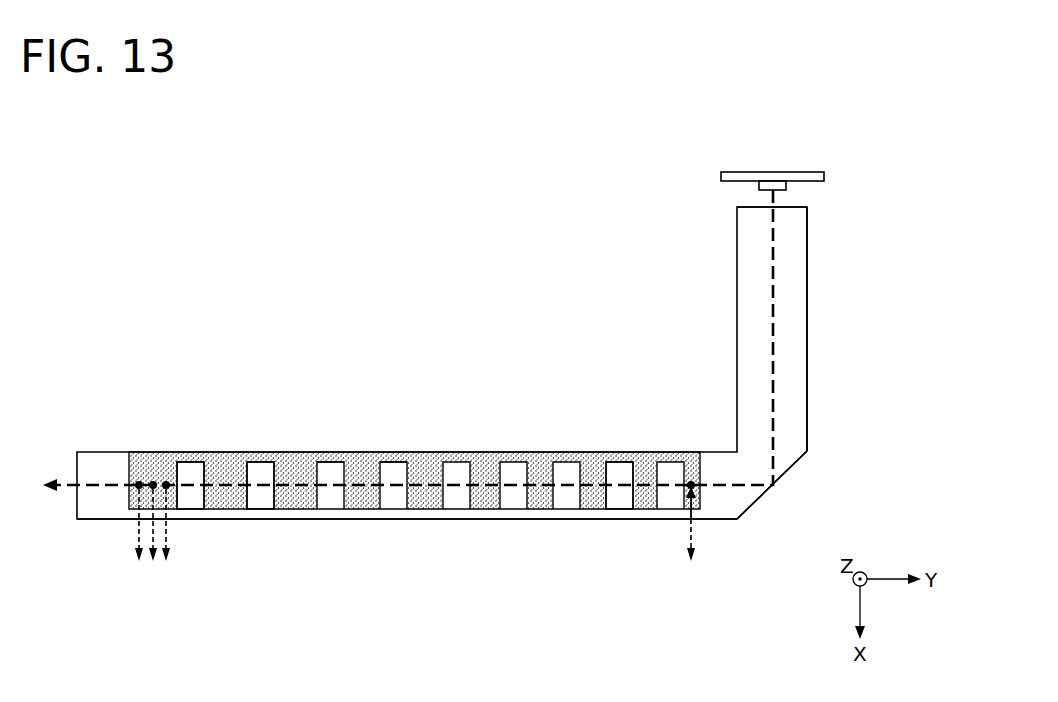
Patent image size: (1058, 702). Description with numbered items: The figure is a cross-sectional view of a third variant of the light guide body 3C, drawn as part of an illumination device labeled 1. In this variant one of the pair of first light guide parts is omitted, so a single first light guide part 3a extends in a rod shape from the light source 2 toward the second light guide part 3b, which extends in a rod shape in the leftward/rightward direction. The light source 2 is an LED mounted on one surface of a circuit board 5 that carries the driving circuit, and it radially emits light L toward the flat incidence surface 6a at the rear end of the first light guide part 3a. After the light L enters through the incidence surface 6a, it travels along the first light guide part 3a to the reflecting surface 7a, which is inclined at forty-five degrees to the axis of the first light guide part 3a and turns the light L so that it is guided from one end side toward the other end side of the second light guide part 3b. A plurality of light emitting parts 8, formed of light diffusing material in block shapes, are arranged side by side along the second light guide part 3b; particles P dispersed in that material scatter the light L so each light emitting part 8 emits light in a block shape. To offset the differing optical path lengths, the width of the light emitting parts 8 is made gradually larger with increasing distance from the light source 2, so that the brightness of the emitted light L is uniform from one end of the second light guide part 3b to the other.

The illumination device 1 is at (124, 189).
The light source 2 is at (773, 181).
The first light guide part 3a is at (808, 293).
The second light guide part 3b is at (437, 519).
The light guide body 3C is at (419, 420).
The circuit board 5 is at (826, 177).
The incidence surface 6a is at (789, 208).
The reflecting surface 7a is at (780, 481).
The light emitting part 8 is at (171, 509).
The particles P is at (361, 470).
The light L is at (778, 336).